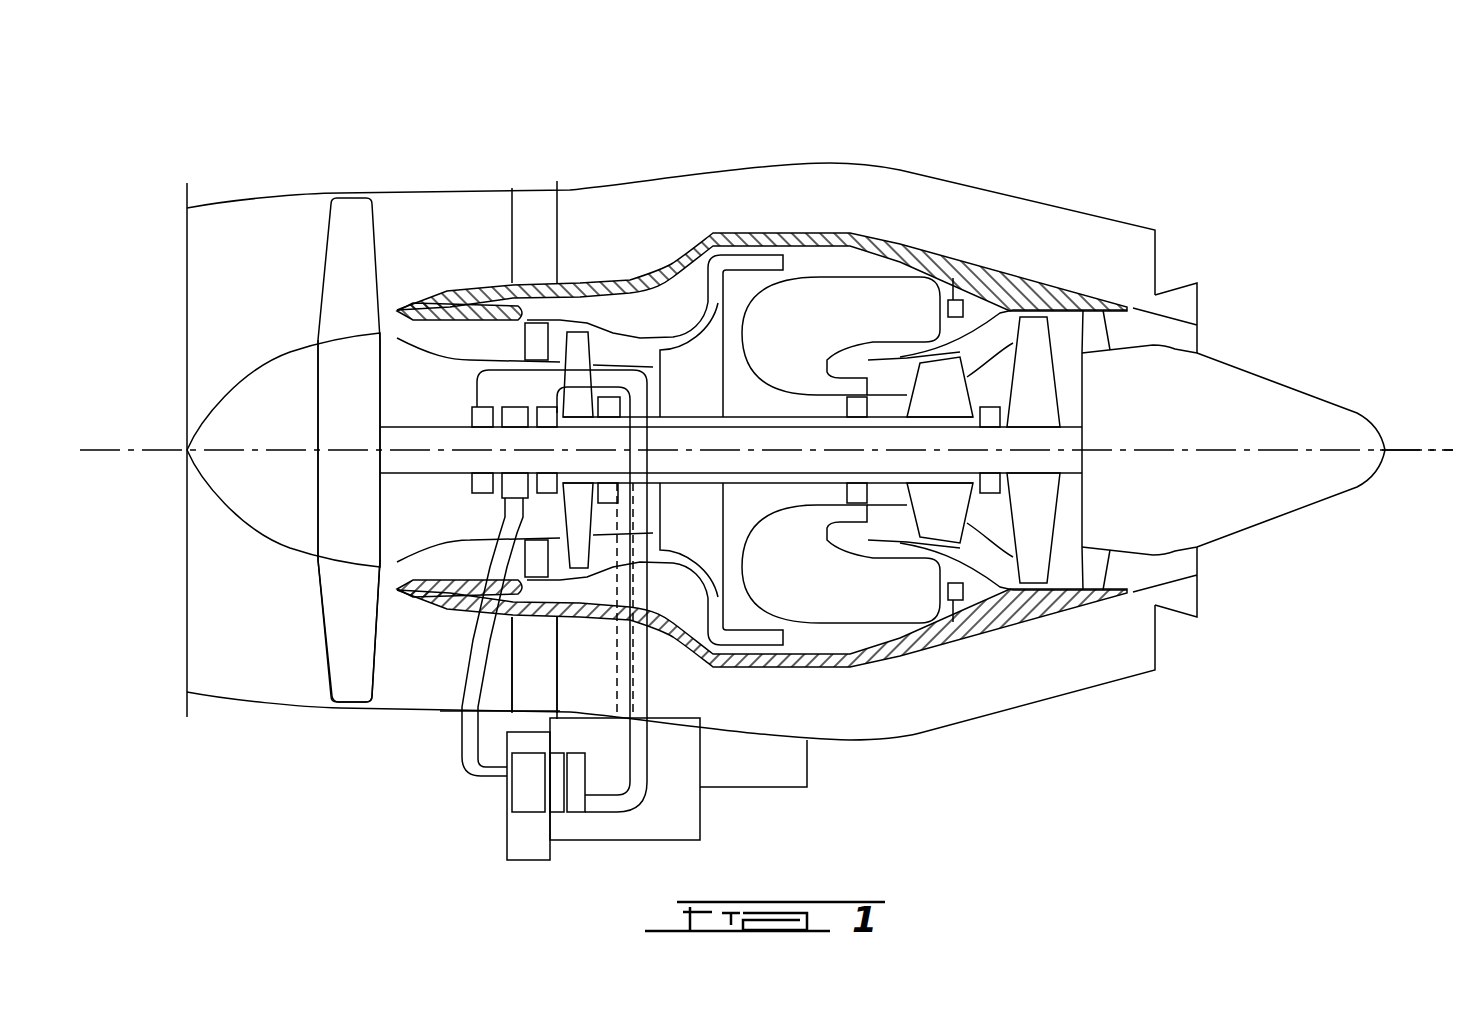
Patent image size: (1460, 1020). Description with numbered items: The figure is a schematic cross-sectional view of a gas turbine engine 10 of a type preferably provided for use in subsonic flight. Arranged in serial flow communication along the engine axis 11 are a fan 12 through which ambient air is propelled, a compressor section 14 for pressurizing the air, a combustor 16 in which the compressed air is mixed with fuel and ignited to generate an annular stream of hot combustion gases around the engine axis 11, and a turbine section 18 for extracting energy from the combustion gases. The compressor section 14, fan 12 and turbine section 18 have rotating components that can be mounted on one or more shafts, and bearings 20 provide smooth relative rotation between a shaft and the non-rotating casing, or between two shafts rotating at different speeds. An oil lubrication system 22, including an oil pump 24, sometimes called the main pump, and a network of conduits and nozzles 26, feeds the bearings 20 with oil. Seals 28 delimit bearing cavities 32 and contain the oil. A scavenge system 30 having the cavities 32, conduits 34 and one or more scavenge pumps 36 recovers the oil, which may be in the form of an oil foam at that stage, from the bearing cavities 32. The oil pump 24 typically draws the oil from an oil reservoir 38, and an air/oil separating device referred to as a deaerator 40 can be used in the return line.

The gas turbine engine 10 is at (1003, 118).
The engine axis 11 is at (1423, 450).
The fan 12 is at (352, 622).
The compressor section 14 is at (614, 343).
The combustor 16 is at (848, 300).
The turbine section 18 is at (987, 520).
The bearings 20 is at (518, 407).
The oil lubrication system 22 is at (457, 755).
The oil pump 24 is at (520, 798).
The network of conduits and nozzles 26 is at (458, 712).
The seals 28 is at (482, 407).
The scavenge system 30 is at (648, 740).
The bearing cavities 32 is at (541, 345).
The conduits 34 is at (633, 805).
The scavenge pumps 36 is at (557, 806).
The oil reservoir 38 is at (520, 842).
The deaerator 40 is at (577, 806).